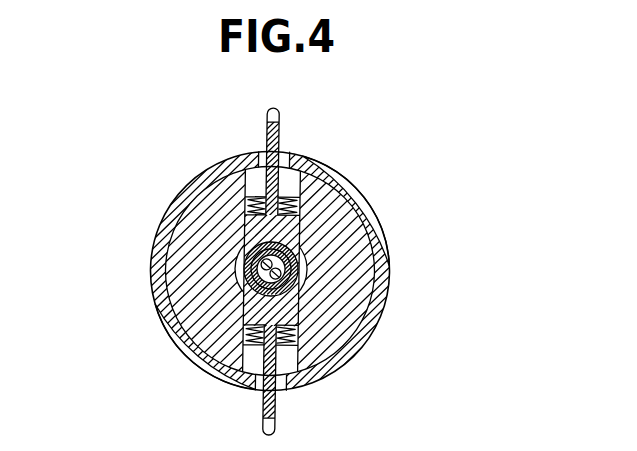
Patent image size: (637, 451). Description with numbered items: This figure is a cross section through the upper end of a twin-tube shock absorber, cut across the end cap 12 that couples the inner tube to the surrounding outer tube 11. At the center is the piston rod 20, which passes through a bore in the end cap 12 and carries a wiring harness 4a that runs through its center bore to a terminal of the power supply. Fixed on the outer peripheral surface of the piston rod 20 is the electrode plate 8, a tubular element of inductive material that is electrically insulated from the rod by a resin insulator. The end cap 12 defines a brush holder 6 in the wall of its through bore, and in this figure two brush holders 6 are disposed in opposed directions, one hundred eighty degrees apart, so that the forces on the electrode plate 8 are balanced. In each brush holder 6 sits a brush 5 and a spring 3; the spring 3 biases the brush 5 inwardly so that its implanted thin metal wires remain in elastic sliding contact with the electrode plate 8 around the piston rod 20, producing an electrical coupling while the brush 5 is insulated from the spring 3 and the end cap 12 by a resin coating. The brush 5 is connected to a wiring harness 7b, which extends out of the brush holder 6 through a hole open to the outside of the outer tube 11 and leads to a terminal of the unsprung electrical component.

The spring 3 is at (260, 206).
The brush 5 is at (246, 236).
The piston rod 20 is at (244, 258).
The electrode plate 8 is at (245, 272).
The wiring harness 4a is at (307, 265).
The outer tube 11 is at (361, 193).
The end cap 12 is at (332, 330).
The brush holder 6 is at (298, 335).
The wiring harness 7b is at (263, 407).